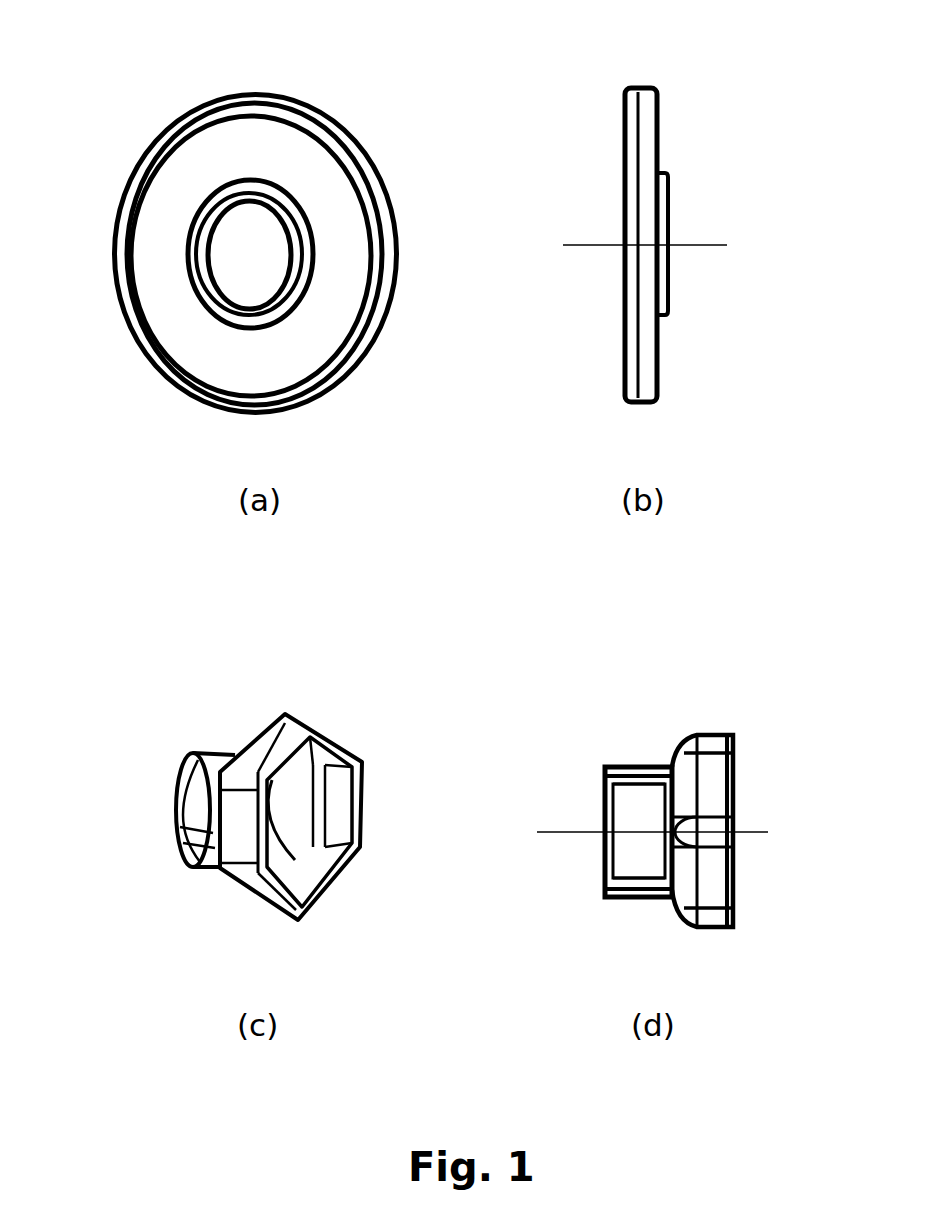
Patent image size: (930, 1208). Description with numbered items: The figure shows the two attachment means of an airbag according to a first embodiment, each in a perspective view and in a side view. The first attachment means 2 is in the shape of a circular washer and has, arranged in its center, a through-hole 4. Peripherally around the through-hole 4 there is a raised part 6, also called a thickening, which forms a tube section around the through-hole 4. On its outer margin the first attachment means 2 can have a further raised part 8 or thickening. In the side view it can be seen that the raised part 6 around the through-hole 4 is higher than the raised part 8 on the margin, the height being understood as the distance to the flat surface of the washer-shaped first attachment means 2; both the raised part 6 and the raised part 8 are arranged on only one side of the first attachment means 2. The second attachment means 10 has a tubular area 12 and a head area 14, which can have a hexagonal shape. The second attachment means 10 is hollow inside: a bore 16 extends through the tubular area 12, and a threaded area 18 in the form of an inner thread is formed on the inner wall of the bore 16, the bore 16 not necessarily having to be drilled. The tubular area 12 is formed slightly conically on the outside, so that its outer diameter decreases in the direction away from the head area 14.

The first attachment means 2 is at (136, 92).
The through-hole 4 is at (232, 266).
The raised part 6 is at (292, 312).
The raised part 8 is at (321, 120).
The second attachment means 10 is at (212, 705).
The tubular area 12 is at (192, 867).
The head area 14 is at (352, 735).
The bore 16 is at (583, 858).
The threaded area 18 is at (635, 865).